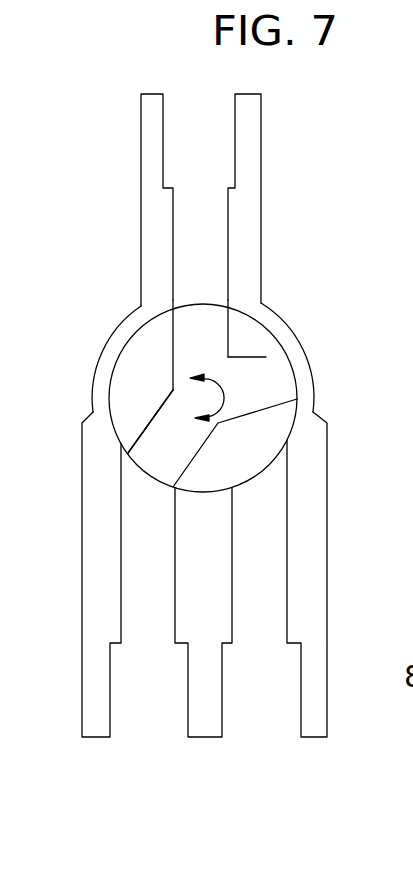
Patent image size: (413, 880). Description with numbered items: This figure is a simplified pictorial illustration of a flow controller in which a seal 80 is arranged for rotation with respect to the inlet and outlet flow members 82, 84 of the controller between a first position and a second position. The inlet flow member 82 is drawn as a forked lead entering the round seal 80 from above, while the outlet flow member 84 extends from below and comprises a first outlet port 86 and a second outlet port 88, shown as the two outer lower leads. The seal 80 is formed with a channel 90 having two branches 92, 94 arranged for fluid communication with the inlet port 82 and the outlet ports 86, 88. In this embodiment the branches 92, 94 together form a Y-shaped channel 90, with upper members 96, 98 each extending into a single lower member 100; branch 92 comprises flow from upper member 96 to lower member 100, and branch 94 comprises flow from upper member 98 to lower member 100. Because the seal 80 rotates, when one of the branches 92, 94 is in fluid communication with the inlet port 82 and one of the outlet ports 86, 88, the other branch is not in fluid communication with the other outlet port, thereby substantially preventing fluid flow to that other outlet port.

The seal 80 is at (146, 353).
The inlet flow member 82 is at (245, 142).
The outlet flow member 84 is at (124, 760).
The first outlet port 86 is at (88, 690).
The second outlet port 88 is at (320, 698).
The channel 90 is at (180, 406).
The branch 92 is at (186, 316).
The branch 94 is at (296, 354).
The upper member 96 is at (216, 314).
The upper member 98 is at (268, 368).
The lower member 100 is at (153, 465).